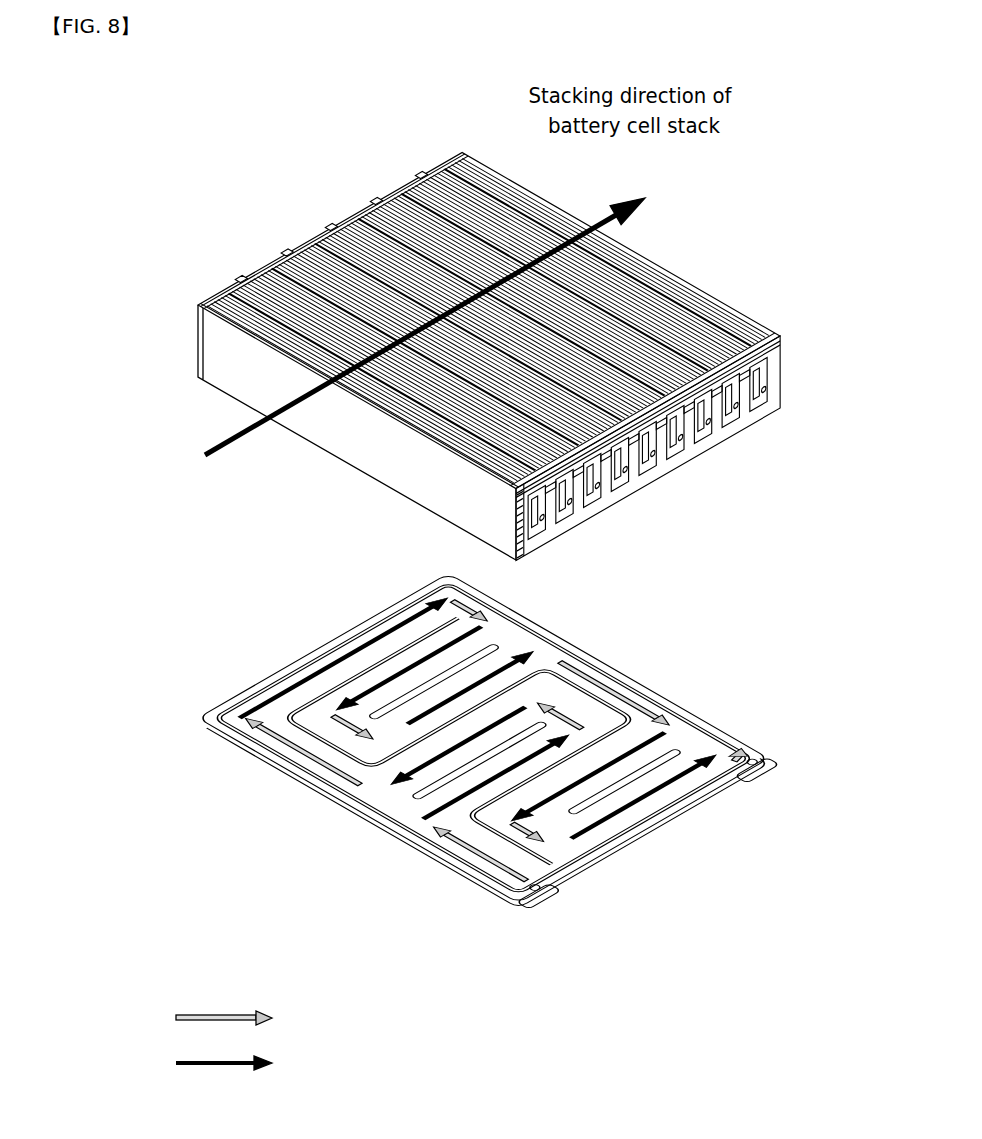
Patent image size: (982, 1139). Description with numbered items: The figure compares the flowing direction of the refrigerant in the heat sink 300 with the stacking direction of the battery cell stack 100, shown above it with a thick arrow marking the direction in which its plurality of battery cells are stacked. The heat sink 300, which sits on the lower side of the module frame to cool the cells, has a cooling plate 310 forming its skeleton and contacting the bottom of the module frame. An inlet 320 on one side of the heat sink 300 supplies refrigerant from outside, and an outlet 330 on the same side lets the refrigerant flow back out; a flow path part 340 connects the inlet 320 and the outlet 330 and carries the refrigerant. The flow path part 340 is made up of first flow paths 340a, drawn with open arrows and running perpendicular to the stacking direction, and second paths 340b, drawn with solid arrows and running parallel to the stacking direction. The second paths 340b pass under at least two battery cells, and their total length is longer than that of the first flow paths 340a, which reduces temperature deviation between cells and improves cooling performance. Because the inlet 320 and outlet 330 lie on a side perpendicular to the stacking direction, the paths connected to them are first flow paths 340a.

The battery cell stack 100 is at (690, 268).
The heat sink 300 is at (511, 741).
The cooling plate 310 is at (300, 762).
The inlet 320 is at (752, 758).
The outlet 330 is at (522, 888).
The flow path part 340 is at (635, 816).
The first flow path 340a is at (278, 1019).
The second path 340b is at (281, 1064).